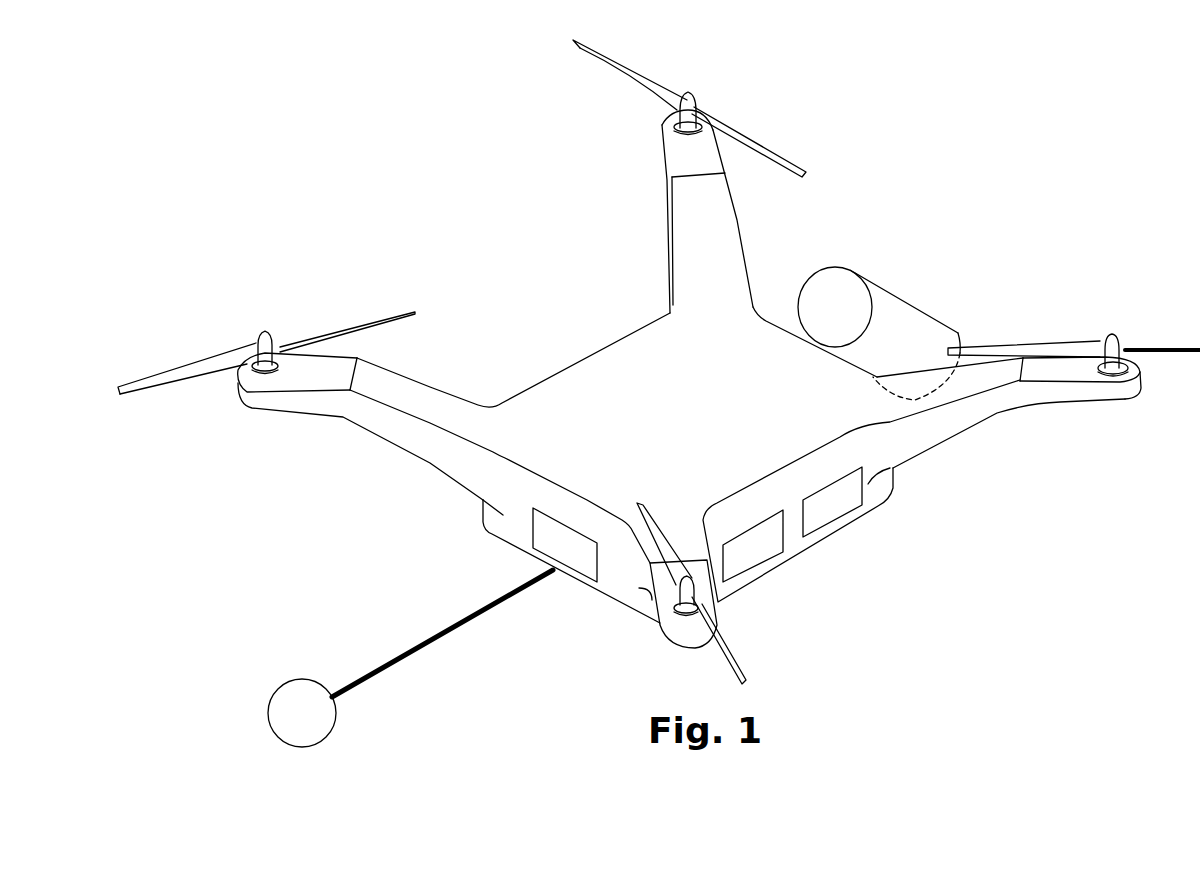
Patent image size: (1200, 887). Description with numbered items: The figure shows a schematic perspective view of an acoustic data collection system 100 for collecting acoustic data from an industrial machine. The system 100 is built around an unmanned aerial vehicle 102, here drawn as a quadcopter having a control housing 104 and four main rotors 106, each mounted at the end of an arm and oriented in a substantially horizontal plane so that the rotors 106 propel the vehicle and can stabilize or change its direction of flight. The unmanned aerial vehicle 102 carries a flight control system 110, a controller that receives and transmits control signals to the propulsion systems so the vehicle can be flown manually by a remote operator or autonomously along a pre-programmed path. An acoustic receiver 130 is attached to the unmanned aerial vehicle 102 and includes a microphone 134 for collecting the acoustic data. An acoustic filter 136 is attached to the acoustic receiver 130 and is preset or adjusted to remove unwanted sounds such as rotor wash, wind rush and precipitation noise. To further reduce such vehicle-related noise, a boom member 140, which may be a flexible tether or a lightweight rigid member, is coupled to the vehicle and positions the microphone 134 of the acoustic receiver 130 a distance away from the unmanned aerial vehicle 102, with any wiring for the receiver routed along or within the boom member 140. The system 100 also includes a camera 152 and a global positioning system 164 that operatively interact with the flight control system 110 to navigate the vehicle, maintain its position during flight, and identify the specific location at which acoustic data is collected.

The acoustic data collection system 100 is at (398, 137).
The unmanned aerial vehicle 102 is at (566, 362).
The control housing 104 is at (640, 354).
The main rotor 106 is at (610, 75).
The flight control system 110 is at (832, 500).
The acoustic receiver 130 is at (256, 723).
The microphone 134 is at (337, 724).
The acoustic filter 136 is at (549, 539).
The boom member 140 is at (487, 627).
The camera 152 is at (902, 315).
The global positioning system 164 is at (753, 545).